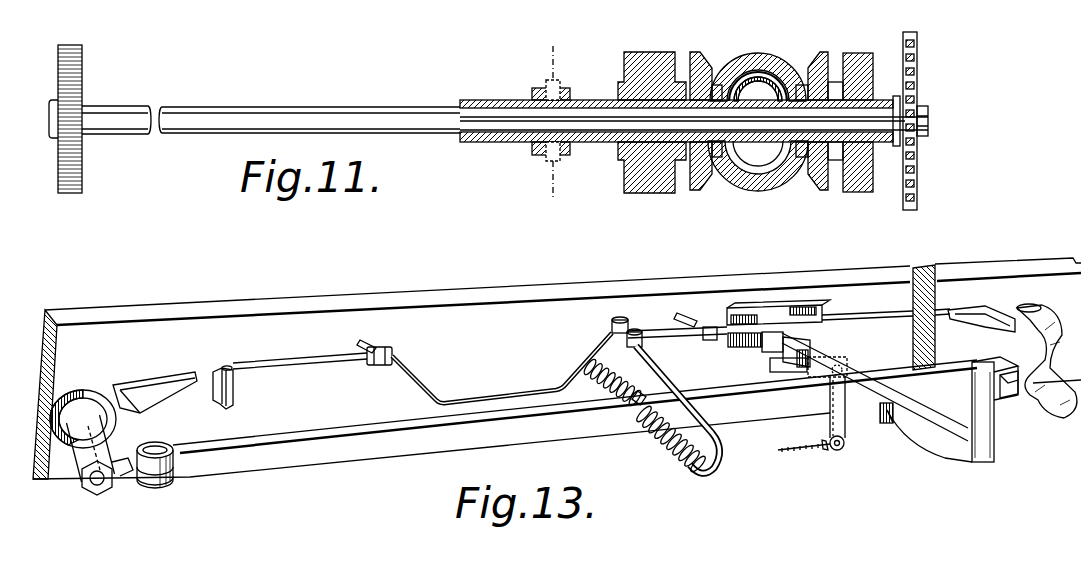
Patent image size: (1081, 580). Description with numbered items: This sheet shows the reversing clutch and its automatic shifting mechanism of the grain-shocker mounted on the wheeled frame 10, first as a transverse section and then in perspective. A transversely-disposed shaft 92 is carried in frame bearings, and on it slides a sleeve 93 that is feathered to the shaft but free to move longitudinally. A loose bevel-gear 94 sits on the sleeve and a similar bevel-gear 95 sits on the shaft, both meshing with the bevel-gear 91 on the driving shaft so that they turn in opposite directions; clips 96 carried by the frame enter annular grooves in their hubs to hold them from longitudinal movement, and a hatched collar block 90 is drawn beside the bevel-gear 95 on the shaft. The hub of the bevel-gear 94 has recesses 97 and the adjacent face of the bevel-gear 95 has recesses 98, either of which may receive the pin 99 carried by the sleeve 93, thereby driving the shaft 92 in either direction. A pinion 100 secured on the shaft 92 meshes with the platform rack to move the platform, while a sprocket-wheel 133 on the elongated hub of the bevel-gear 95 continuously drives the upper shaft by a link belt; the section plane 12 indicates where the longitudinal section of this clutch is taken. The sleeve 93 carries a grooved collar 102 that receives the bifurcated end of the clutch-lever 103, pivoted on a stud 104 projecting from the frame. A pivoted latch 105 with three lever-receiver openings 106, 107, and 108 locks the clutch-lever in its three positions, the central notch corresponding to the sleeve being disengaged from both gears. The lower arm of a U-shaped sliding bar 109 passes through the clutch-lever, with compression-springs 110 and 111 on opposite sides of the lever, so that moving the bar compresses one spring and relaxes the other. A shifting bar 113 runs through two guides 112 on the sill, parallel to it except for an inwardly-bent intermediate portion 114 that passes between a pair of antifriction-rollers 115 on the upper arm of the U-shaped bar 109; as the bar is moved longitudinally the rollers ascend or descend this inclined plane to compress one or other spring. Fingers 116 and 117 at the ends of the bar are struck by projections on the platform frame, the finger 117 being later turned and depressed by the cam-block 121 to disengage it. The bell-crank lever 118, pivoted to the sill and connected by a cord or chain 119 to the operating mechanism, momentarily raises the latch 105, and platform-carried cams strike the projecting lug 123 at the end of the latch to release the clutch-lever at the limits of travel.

In FIG. 13, the wheeled frame 10 is at (348, 300).
In FIG. 11, the section line 12 is at (549, 126).
In FIG. 11, the collar block 90 is at (858, 52).
In FIG. 11, the bevel-gear 91 is at (756, 52).
In FIG. 11, the transversely-disposed shaft 92 is at (300, 104).
In FIG. 11, the sleeve 93 is at (586, 99).
In FIG. 11, the loose bevel-gear 94 is at (701, 50).
In FIG. 11, the bevel-gear 95 is at (812, 52).
In FIG. 11, the clips 96 is at (670, 193).
In FIG. 11, the recesses 97 is at (720, 188).
In FIG. 11, the recesses 98 is at (768, 192).
In FIG. 11, the pin 99 is at (758, 86).
In FIG. 11, the pinion 100 is at (85, 55).
In FIG. 11, the grooved collar 102 is at (533, 150).
In FIG. 13, the clutch-lever 103 is at (444, 449).
In FIG. 13, the stud 104 is at (99, 480).
In FIG. 13, the pivoted latch 105 is at (952, 466).
In FIG. 13, the lever-receiver opening 106 is at (887, 425).
In FIG. 13, the lever-receiver opening 107 is at (832, 395).
In FIG. 13, the lever-receiver opening 108 is at (822, 352).
In FIG. 13, the U-shaped sliding bar 109 is at (718, 470).
In FIG. 13, the compression-spring 110 is at (664, 443).
In FIG. 13, the compression-spring 111 is at (602, 405).
In FIG. 13, the guides 112 is at (384, 366).
In FIG. 13, the shifting bar 113 is at (330, 358).
In FIG. 13, the inwardly-bent intermediate portion 114 is at (592, 367).
In FIG. 13, the antifriction-rollers 115 is at (611, 322).
In FIG. 13, the finger 116 is at (229, 366).
In FIG. 13, the finger 117 is at (997, 330).
In FIG. 13, the bell-crank lever 118 is at (839, 450).
In FIG. 13, the cord or chain 119 is at (785, 452).
In FIG. 13, the cam-block 121 is at (1033, 306).
In FIG. 13, the projecting lug 123 is at (1012, 398).
In FIG. 11, the sprocket-wheel 133 is at (918, 56).